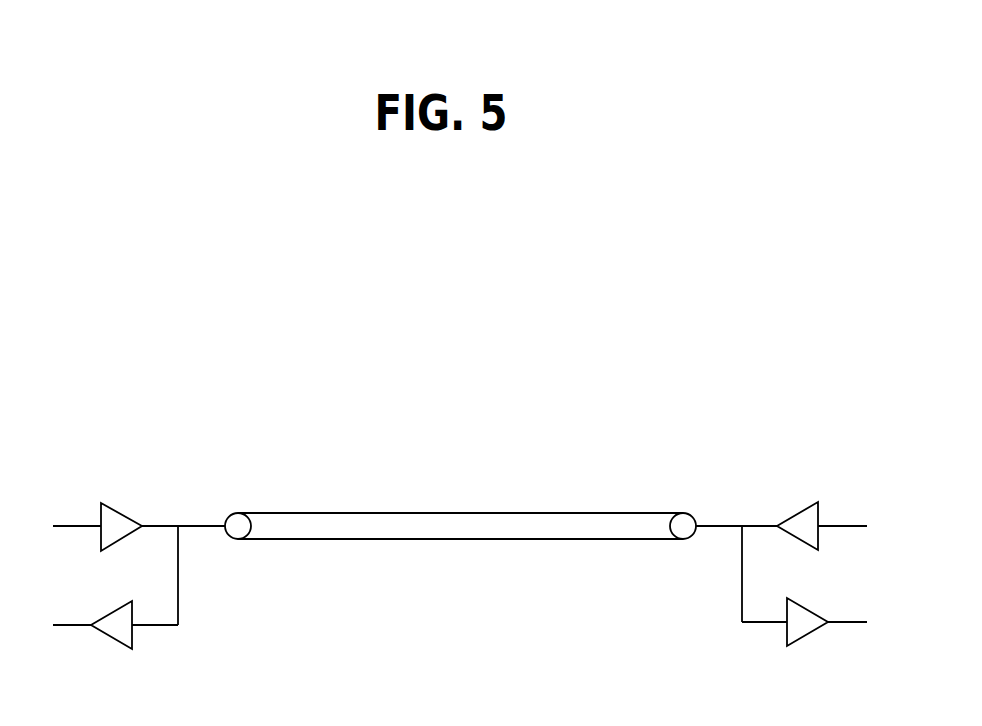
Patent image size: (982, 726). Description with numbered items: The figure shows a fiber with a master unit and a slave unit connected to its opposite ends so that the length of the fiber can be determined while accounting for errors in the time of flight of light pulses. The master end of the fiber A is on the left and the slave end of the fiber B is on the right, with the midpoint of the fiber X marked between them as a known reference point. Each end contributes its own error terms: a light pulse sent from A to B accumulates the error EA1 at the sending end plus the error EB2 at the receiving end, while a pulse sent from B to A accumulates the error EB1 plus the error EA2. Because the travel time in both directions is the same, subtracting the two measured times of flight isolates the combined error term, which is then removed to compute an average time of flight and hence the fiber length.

The master end of the fiber A is at (172, 516).
The slave end of the fiber B is at (741, 514).
The midpoint of the fiber X is at (458, 503).
The time-of-flight error at A for transmission EA1 is at (112, 516).
The time-of-flight error at A for reception EA2 is at (112, 645).
The time-of-flight error at B for transmission EB1 is at (791, 513).
The time-of-flight error at B for reception EB2 is at (791, 635).